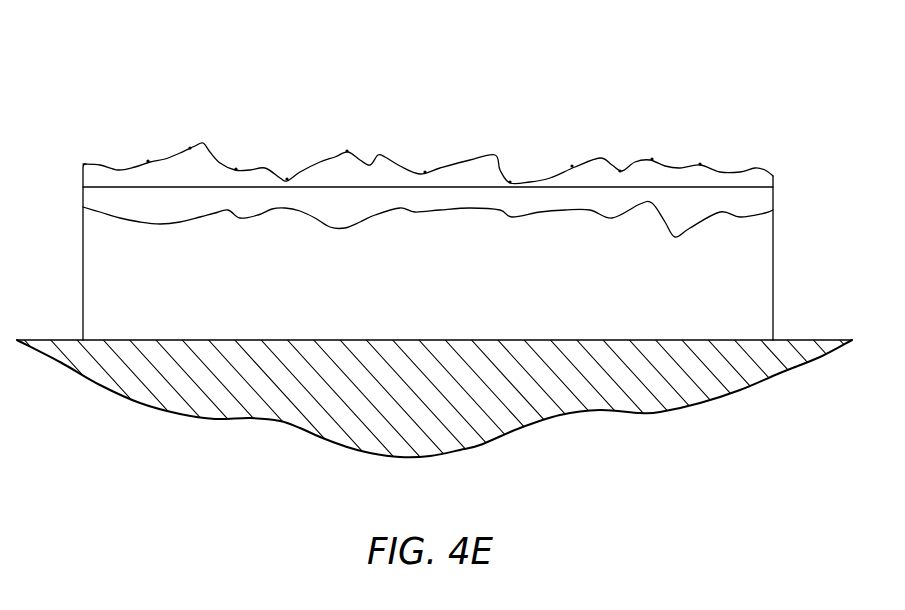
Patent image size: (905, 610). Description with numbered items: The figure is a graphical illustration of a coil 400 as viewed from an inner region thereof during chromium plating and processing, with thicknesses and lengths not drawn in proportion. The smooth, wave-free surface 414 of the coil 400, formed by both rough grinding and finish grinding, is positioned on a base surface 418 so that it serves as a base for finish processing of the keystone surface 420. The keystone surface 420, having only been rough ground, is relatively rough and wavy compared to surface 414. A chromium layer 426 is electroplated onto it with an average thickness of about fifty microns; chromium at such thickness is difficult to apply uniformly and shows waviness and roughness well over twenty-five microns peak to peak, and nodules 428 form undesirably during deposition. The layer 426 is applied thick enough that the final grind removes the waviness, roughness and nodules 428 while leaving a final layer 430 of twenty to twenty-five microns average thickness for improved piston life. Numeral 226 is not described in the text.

The coil 400 is at (747, 267).
The surface 414 is at (350, 340).
The base surface 418 is at (228, 389).
The keystone surface 420 is at (362, 224).
The chromium layer 426 is at (675, 187).
The nodules 428 is at (652, 160).
The final layer 430 is at (148, 208).
The top surface 226 is at (199, 190).